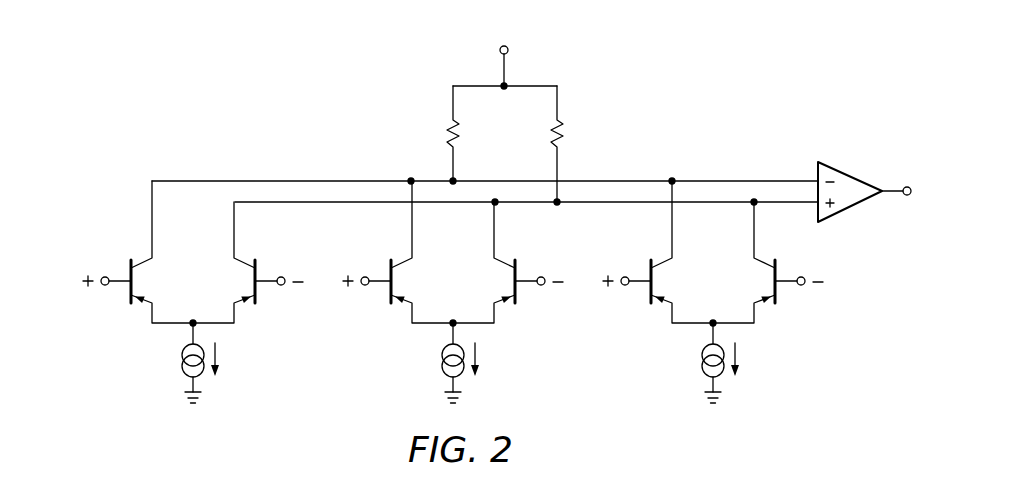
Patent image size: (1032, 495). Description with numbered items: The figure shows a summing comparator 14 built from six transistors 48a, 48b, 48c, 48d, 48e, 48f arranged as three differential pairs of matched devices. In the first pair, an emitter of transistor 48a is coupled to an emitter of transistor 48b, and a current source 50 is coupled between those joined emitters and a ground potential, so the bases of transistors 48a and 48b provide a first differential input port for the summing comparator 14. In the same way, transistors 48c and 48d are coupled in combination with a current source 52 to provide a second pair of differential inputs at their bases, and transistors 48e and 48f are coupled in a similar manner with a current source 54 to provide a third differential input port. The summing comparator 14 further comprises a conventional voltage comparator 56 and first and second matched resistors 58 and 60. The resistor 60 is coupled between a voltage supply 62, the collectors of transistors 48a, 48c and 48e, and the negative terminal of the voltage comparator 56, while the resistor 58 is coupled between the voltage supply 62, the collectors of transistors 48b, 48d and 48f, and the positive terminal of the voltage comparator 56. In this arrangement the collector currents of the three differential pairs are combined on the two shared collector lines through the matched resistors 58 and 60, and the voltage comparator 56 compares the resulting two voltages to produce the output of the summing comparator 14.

The summing comparator 14 is at (729, 80).
The transistor 48a is at (131, 297).
The transistor 48b is at (257, 297).
The transistor 48c is at (391, 265).
The transistor 48d is at (517, 297).
The transistor 48e is at (651, 265).
The transistor 48f is at (777, 297).
The current source 50 is at (182, 366).
The current source 52 is at (442, 366).
The current source 54 is at (702, 366).
The voltage comparator 56 is at (846, 173).
The resistor 58 is at (561, 127).
The resistor 60 is at (449, 128).
The voltage supply 62 is at (510, 48).